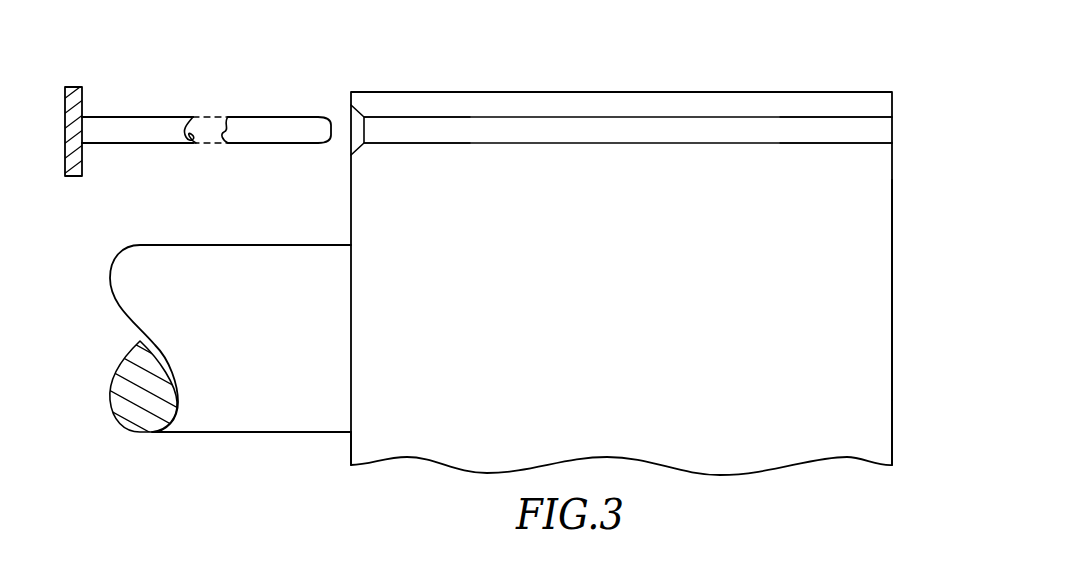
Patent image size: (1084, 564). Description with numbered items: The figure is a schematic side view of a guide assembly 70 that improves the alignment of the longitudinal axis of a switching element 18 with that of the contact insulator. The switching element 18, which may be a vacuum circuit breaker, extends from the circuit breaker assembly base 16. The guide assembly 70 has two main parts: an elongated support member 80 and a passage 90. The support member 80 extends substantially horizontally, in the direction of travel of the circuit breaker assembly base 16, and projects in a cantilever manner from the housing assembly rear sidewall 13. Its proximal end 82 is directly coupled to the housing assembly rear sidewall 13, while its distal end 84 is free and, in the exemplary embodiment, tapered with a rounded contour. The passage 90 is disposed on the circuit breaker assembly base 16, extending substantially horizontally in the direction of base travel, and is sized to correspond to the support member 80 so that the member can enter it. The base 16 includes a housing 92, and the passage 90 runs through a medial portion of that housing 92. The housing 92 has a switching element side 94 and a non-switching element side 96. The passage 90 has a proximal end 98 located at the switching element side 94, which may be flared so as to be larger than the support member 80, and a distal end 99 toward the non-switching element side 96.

The housing assembly rear sidewall 13 is at (83, 87).
The circuit breaker assembly base 16 is at (880, 223).
The switching element 18 is at (278, 336).
The guide assembly 70 is at (390, 64).
The support member 80 is at (247, 133).
The support member proximal end 82 is at (122, 96).
The support member distal end 84 is at (327, 138).
The passage 90 is at (711, 110).
The circuit breaker assembly base housing 92 is at (868, 305).
The switching element side 94 is at (350, 447).
The non-switching element side 96 is at (893, 417).
The passage proximal end 98 is at (425, 125).
The passage distal end 99 is at (822, 128).